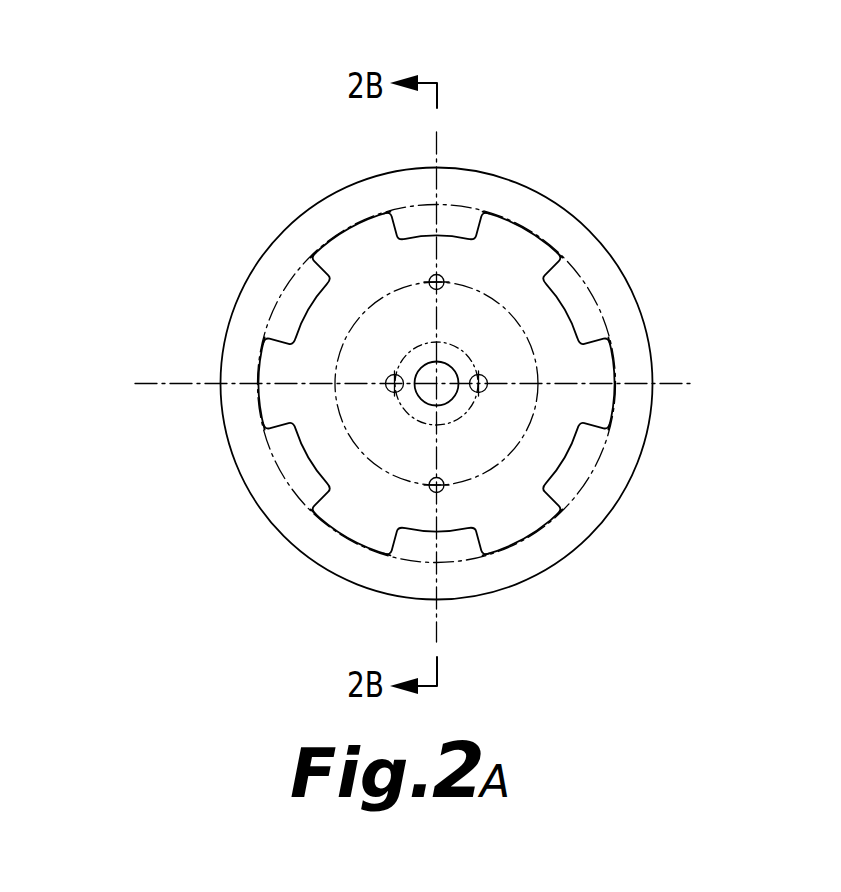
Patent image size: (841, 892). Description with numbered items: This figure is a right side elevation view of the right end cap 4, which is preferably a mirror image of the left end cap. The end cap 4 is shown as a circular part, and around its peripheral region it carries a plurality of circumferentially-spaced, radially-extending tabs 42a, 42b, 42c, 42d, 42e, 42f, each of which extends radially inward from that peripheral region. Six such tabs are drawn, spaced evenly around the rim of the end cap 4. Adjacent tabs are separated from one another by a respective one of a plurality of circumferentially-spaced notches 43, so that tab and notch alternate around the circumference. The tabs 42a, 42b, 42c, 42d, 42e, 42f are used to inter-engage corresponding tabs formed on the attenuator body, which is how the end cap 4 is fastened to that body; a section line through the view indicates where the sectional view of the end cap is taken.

The right end cap 4 is at (519, 168).
The tab 42a is at (448, 222).
The tab 42b is at (578, 298).
The tab 42c is at (586, 455).
The tab 42d is at (453, 550).
The tab 42e is at (290, 461).
The tab 42f is at (297, 303).
The notch 43 is at (347, 245).